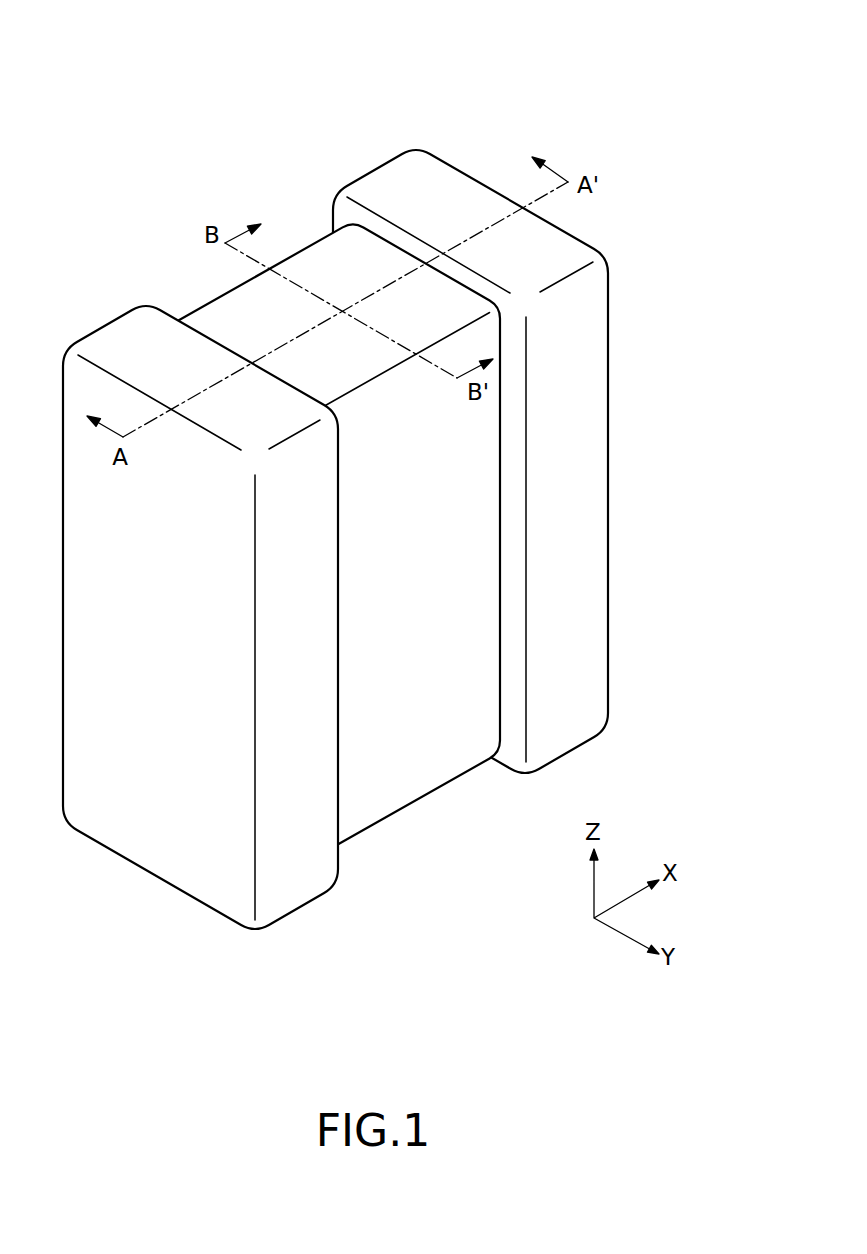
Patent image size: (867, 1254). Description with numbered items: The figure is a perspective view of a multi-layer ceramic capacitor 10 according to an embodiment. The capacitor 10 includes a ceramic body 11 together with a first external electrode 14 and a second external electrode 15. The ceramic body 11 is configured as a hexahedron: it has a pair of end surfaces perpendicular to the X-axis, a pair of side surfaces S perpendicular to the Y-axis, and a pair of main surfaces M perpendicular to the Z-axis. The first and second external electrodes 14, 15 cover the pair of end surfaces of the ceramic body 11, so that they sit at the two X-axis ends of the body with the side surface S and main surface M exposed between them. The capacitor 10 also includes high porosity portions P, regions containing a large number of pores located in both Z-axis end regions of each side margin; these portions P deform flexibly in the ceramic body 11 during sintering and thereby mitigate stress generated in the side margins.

The multi-layer ceramic capacitor 10 is at (335, 476).
The ceramic body 11 is at (327, 502).
The first external electrode 14 is at (130, 343).
The second external electrode 15 is at (390, 187).
The high porosity portion P is at (217, 296).
The main surface M is at (332, 357).
The side surface S is at (414, 591).